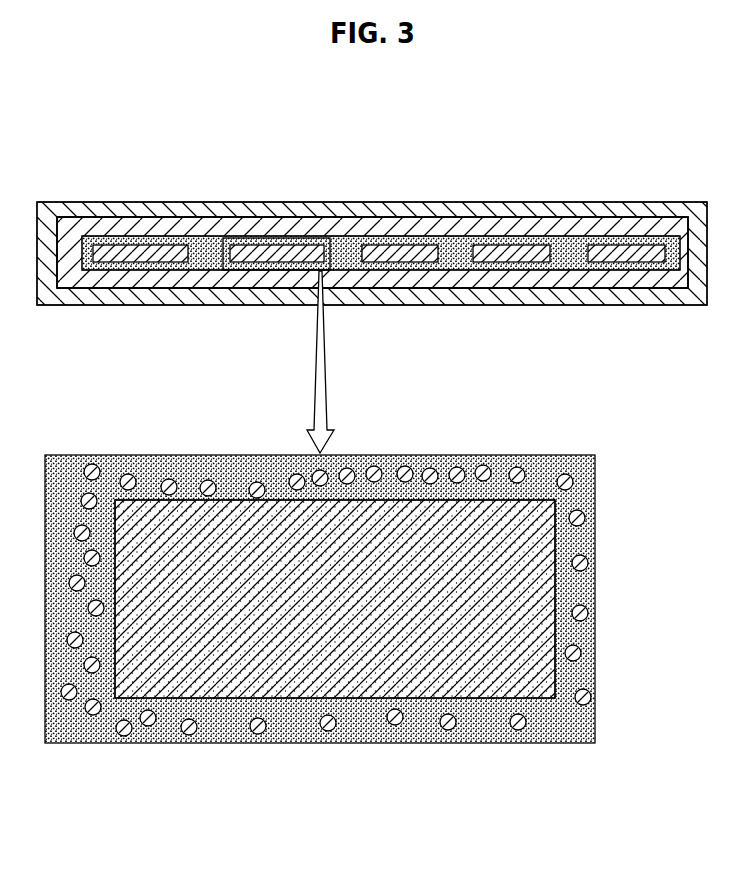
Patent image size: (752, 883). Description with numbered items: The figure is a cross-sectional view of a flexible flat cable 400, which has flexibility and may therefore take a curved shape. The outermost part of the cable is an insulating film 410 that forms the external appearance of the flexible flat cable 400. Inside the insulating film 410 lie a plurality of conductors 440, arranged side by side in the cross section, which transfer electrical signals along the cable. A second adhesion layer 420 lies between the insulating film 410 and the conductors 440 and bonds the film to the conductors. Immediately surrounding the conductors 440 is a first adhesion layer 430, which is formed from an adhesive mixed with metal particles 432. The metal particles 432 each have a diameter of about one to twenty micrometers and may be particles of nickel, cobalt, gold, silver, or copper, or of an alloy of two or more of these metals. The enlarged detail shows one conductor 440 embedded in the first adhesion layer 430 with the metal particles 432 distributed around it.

The flexible flat cable 400 is at (182, 183).
The insulating film 410 is at (336, 209).
The second adhesion layer 420 is at (398, 223).
The first adhesion layer 430 is at (452, 243).
The metal particles 432 is at (584, 513).
The conductors 440 is at (513, 250).